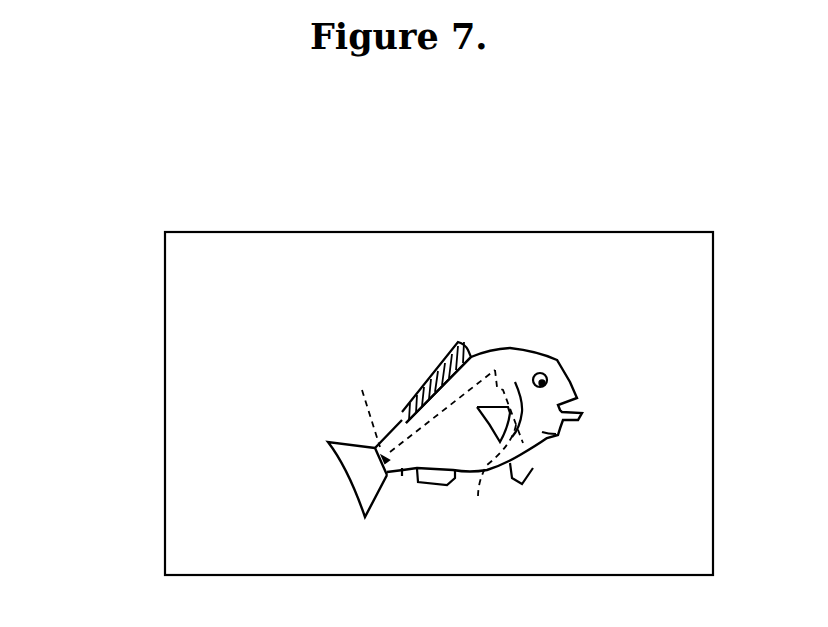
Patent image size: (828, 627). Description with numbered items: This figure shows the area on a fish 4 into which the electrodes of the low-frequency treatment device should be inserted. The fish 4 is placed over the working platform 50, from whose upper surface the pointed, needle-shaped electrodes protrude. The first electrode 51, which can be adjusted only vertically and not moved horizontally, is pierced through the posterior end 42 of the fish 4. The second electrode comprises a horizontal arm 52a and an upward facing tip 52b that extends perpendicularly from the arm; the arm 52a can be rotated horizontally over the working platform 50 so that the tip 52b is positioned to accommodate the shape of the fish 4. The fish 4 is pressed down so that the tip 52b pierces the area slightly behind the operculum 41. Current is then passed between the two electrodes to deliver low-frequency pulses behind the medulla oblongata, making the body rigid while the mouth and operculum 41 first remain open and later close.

The working platform 50 is at (223, 442).
The fish 4 is at (558, 375).
The first electrode 51 is at (356, 397).
The upward facing tip 52b is at (495, 370).
The horizontal arm 52a is at (478, 497).
The operculum 41 is at (547, 436).
The posterior end 42 is at (403, 476).